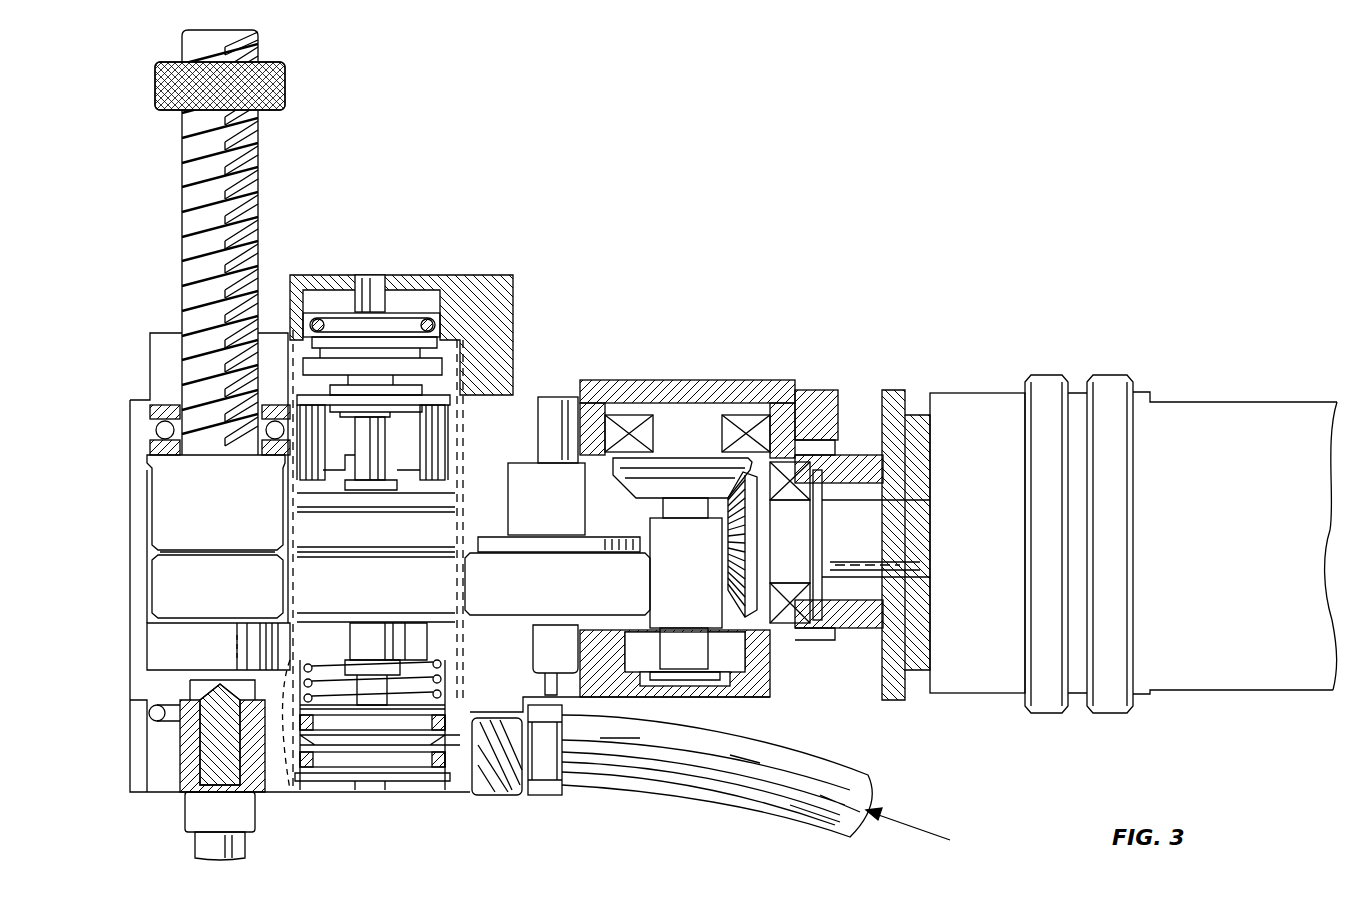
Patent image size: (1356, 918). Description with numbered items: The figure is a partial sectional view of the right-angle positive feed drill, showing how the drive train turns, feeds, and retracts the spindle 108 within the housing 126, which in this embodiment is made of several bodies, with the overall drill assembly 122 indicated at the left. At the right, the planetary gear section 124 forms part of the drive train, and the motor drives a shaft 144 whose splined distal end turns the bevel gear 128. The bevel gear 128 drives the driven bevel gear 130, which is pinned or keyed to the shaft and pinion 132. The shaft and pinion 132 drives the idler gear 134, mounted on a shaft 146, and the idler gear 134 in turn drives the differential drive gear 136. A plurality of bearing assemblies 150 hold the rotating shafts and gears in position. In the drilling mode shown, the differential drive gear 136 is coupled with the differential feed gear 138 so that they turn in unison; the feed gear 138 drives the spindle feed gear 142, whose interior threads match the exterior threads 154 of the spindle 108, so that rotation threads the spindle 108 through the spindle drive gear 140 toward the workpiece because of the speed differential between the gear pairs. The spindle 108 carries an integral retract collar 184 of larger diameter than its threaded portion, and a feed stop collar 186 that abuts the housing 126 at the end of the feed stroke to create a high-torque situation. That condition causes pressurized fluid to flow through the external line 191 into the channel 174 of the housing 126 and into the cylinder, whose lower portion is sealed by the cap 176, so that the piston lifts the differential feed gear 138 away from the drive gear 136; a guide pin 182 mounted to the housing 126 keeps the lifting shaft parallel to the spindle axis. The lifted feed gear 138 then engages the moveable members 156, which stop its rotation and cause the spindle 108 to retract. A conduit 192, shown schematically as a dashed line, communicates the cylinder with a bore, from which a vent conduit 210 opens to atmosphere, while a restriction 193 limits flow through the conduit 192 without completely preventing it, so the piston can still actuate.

The spindle 108 is at (176, 242).
The actuator housing assembly 122 is at (428, 445).
The planetary gear section 124 is at (1133, 449).
The housing 126 is at (482, 287).
The bevel gear 128 is at (767, 597).
The driven bevel gear 130 is at (680, 487).
The shaft and pinion 132 is at (722, 640).
The idler gear 134 is at (583, 513).
The differential drive gear 136 is at (538, 575).
The differential feed gear 138 is at (428, 578).
The spindle drive gear 140 is at (165, 580).
The spindle feed gear 142 is at (165, 520).
The shaft 144 is at (876, 545).
The shaft 146 is at (563, 410).
The bearing assemblies 150 is at (160, 432).
The exterior threads 154 is at (196, 228).
The moveable members 156 is at (430, 520).
The channel 174 is at (452, 760).
The cap 176 is at (372, 760).
The guide pin 182 is at (372, 276).
The retract collar 184 is at (185, 762).
The feed stop collar 186 is at (208, 92).
The external line 191 is at (764, 790).
The conduit 192 is at (240, 650).
The restriction 193 is at (457, 690).
The vent conduit 210 is at (288, 790).